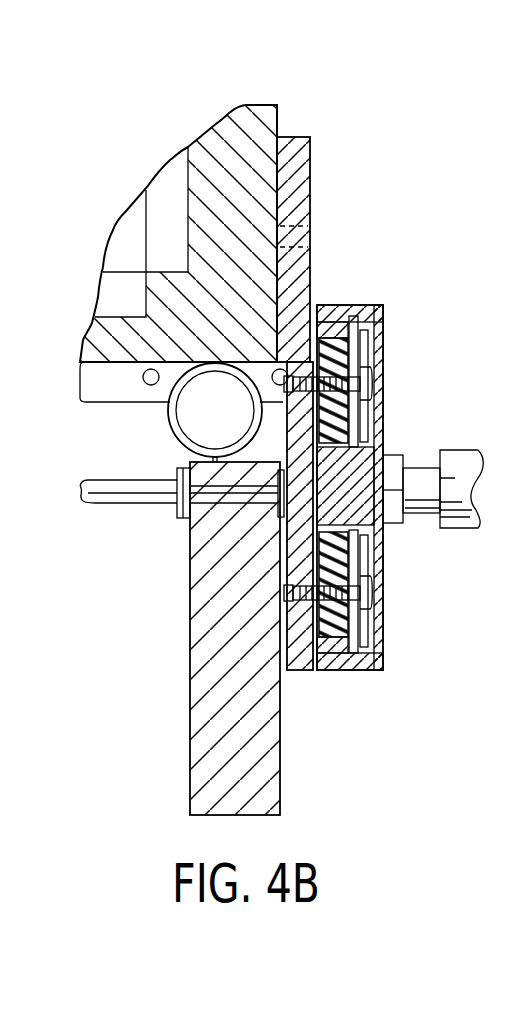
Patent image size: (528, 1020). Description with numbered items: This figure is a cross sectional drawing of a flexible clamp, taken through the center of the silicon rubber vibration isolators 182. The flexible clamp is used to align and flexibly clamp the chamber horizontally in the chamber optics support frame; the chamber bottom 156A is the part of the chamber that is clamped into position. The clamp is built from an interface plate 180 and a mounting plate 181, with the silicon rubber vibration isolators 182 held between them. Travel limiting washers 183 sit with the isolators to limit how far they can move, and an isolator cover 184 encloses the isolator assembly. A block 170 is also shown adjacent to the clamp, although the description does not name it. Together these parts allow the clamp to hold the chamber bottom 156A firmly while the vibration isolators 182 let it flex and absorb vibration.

The chamber bottom 156A is at (249, 140).
The support block 170 is at (191, 645).
The interface plate 180 is at (312, 165).
The mounting plate 181 is at (340, 307).
The silicon rubber vibration isolator 182 is at (340, 307).
The travel limiting washer 183 is at (373, 353).
The isolator cover 184 is at (388, 390).